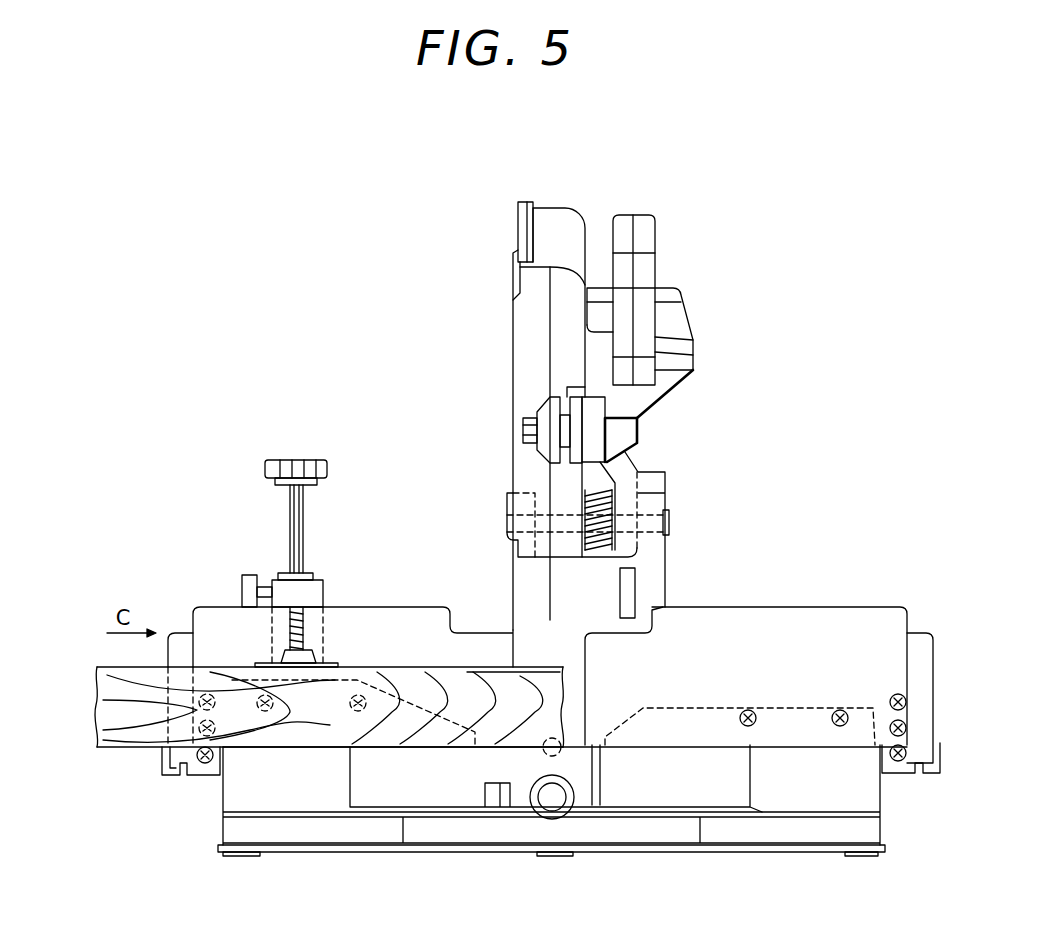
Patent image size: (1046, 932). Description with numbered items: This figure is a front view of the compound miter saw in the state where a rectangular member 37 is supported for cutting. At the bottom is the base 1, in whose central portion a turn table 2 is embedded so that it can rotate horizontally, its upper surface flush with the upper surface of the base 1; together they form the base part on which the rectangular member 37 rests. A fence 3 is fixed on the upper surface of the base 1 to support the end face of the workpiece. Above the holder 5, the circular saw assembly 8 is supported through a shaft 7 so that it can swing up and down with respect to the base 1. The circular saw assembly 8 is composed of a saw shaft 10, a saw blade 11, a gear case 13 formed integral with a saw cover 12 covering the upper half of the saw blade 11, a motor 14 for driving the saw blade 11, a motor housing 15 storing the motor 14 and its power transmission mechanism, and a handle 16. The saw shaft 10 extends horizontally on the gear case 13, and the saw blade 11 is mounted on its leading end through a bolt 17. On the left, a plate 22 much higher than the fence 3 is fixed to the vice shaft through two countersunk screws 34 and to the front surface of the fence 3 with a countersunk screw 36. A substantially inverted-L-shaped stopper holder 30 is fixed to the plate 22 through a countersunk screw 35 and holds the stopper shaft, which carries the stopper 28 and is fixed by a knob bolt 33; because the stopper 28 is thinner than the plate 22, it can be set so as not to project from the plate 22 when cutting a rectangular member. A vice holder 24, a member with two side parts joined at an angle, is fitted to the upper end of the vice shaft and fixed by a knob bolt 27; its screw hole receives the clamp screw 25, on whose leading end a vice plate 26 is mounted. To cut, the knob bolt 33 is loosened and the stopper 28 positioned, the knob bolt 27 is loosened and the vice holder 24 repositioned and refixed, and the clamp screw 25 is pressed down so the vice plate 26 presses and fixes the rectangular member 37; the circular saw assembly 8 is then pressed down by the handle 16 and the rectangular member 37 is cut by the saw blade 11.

The base 1 is at (682, 847).
The turn table 2 is at (632, 787).
The fence 3 is at (375, 723).
The holder 5 is at (665, 562).
The shaft 7 is at (523, 512).
The circular saw assembly 8 is at (555, 210).
The saw shaft 10 is at (567, 433).
The saw blade 11 is at (548, 353).
The saw cover 12 is at (513, 300).
The gear case 13 is at (618, 472).
The motor 14 is at (685, 315).
The motor housing 15 is at (670, 400).
The handle 16 is at (657, 224).
The bolt 17 is at (523, 430).
The plate 22 is at (422, 607).
The vice holder 24 is at (317, 580).
The clamp screw 25 is at (290, 510).
The vice plate 26 is at (307, 657).
The knob bolt 27 is at (243, 590).
The stopper 28 is at (175, 633).
The stopper holder 30 is at (197, 778).
The knob bolt 33 is at (160, 763).
The countersunk screws 34 is at (288, 622).
The countersunk screw 35 is at (232, 680).
The countersunk screw 36 is at (353, 708).
The rectangular member 37 is at (467, 670).